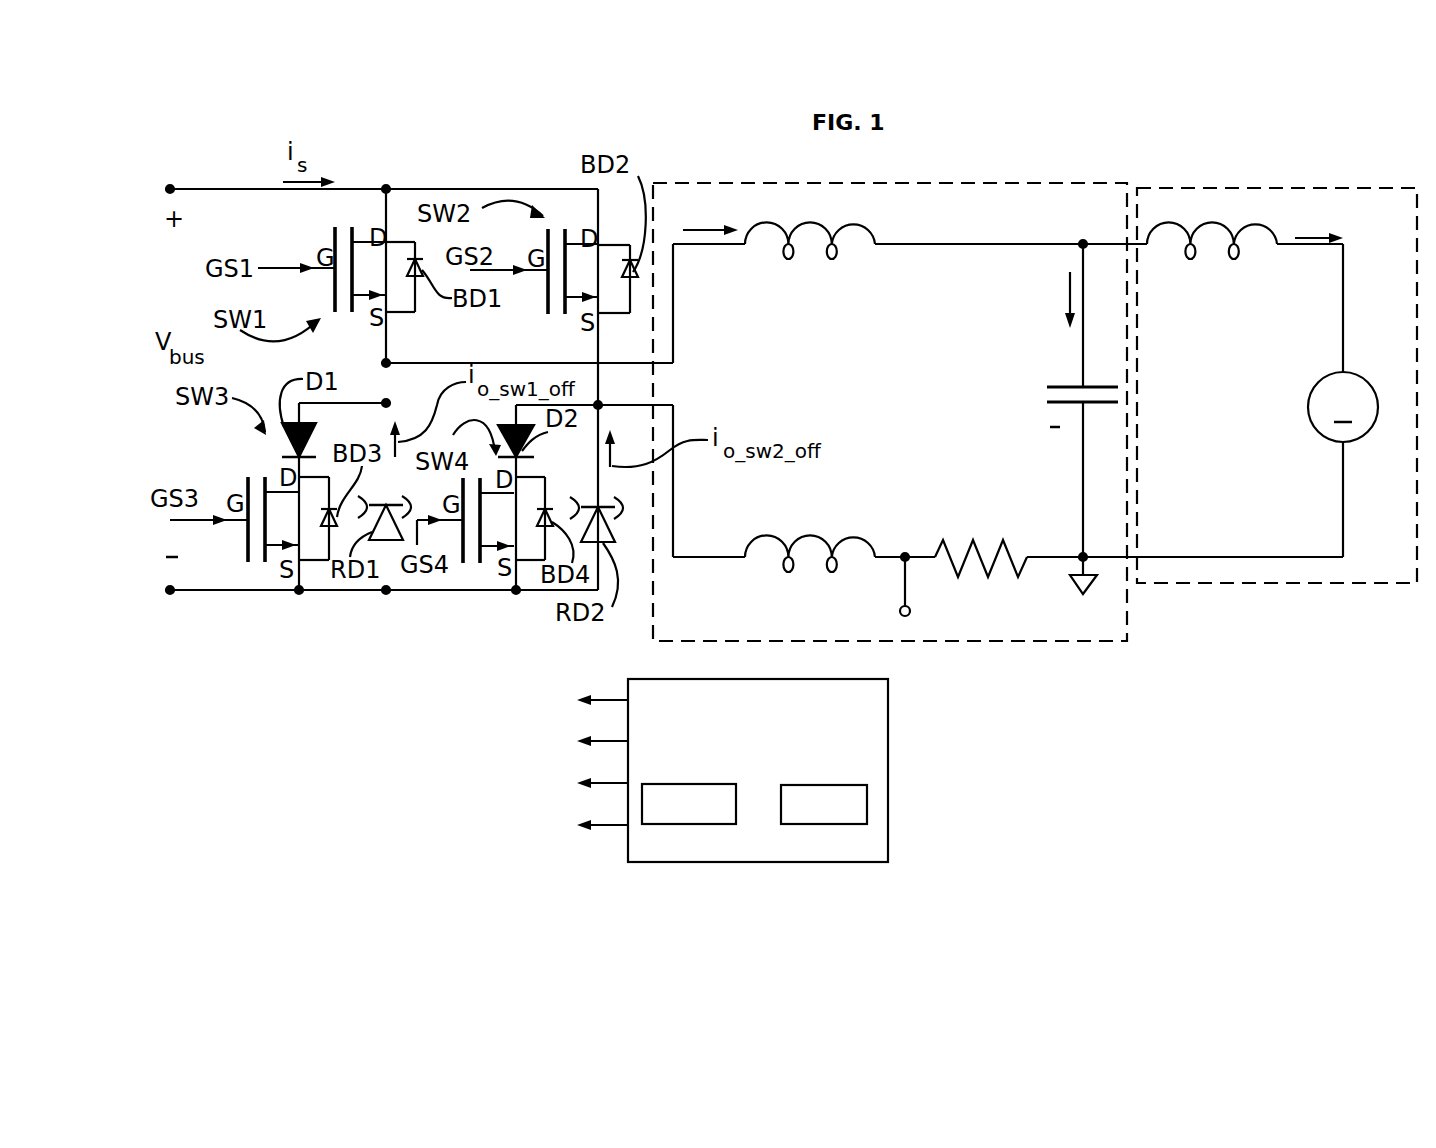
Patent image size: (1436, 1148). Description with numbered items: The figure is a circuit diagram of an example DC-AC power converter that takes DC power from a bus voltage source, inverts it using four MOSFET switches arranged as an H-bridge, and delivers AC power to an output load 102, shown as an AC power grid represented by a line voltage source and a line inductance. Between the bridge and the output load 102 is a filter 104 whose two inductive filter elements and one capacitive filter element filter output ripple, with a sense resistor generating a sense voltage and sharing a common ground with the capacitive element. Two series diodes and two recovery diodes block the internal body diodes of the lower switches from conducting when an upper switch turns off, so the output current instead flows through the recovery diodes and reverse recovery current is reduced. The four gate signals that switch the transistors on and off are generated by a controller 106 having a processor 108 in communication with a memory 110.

The output load 102 is at (1343, 186).
The filter 104 is at (912, 183).
The controller 106 is at (775, 770).
The processor 108 is at (651, 784).
The memory 110 is at (787, 785).